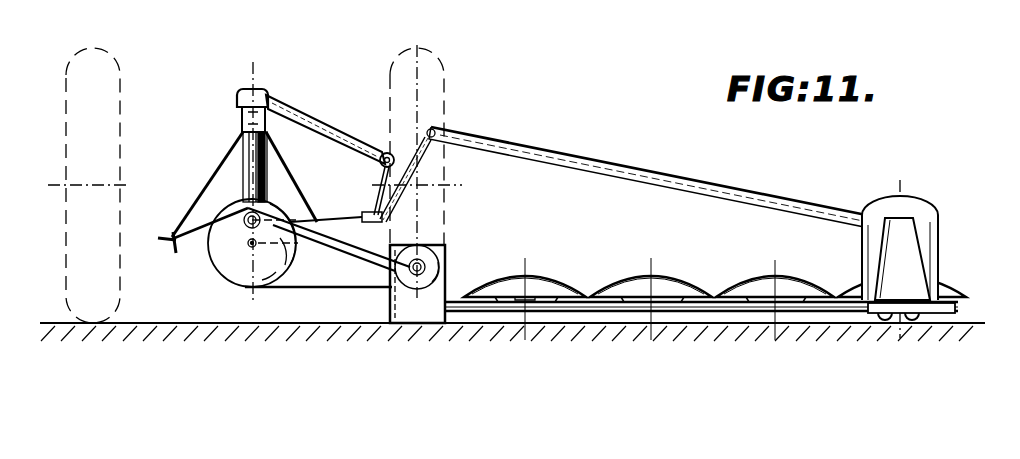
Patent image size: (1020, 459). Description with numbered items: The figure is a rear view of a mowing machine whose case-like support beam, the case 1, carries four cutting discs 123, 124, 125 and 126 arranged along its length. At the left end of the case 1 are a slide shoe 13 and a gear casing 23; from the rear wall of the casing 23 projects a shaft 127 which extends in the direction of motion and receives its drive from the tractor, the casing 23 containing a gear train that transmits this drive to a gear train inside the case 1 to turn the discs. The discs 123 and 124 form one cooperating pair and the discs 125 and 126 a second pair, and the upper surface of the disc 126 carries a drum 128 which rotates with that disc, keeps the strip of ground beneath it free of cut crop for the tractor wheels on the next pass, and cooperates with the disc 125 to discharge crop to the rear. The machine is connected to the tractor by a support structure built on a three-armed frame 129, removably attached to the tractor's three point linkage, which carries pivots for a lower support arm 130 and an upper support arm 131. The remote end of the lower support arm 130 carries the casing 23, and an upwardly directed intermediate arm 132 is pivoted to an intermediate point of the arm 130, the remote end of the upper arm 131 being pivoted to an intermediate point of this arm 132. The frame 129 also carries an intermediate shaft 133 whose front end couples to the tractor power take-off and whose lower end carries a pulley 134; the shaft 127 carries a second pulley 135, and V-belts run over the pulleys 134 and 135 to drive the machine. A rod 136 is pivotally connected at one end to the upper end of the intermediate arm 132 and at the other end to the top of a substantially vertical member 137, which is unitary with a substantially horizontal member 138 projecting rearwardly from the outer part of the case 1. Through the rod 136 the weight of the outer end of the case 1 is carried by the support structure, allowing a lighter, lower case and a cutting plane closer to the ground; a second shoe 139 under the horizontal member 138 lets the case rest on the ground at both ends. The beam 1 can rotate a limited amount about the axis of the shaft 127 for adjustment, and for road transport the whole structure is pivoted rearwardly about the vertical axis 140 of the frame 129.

The case 1 is at (690, 313).
The slide shoe 13 is at (398, 327).
The gear casing 23 is at (446, 296).
The cutting disc 123 is at (489, 276).
The cutting disc 124 is at (681, 273).
The cutting disc 125 is at (811, 278).
The cutting disc 126 is at (947, 284).
The shaft 127 is at (441, 247).
The drum 128 is at (935, 222).
The three-armed frame 129 is at (226, 174).
The lower support arm 130 is at (360, 279).
The upper support arm 131 is at (367, 142).
The intermediate arm 132 is at (378, 186).
The intermediate shaft 133 is at (248, 246).
The pulley 134 is at (240, 278).
The pulley 135 is at (447, 215).
The rod 136 is at (656, 178).
The vertical member 137 is at (911, 246).
The horizontal member 138 is at (890, 314).
The second shoe 139 is at (913, 322).
The vertical axis 140 is at (244, 120).